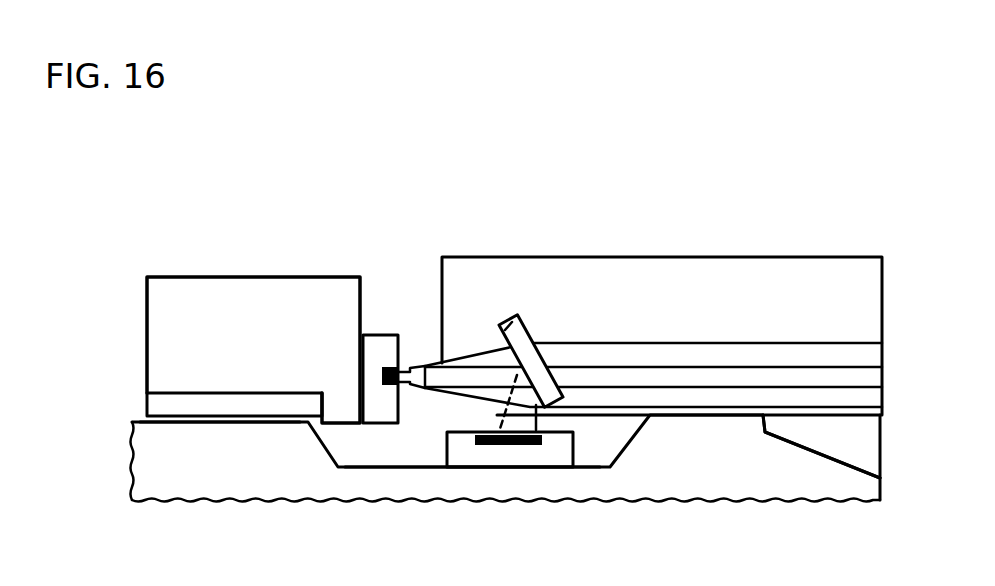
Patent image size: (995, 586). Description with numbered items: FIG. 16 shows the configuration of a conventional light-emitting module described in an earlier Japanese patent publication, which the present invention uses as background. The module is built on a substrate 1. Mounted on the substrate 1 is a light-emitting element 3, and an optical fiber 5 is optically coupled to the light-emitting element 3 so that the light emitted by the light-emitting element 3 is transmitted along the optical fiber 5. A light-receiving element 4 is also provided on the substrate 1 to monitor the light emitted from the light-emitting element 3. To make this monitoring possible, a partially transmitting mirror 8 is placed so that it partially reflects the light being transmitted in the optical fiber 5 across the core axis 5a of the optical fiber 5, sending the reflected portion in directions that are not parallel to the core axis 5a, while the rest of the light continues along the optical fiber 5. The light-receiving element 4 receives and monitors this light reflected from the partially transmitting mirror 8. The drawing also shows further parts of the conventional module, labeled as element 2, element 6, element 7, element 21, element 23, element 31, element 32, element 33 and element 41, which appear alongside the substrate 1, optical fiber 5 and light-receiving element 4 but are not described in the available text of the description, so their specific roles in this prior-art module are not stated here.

The substrate 1 is at (835, 445).
The optical module package 2 is at (262, 285).
The light-emitting element 3 is at (382, 345).
The light-receiving element 4 is at (558, 452).
The optical fiber 5 is at (733, 350).
The core axis 5a is at (778, 382).
The fiber housing 6 is at (650, 287).
The optical filter plate 7 is at (536, 346).
The partially transmitting mirror 8 is at (508, 326).
The light emitting element 21 is at (404, 368).
The support post 23 is at (495, 415).
The upper surface of substrate 31 is at (163, 423).
The recess bottom 32 is at (416, 468).
The groove 33 is at (880, 478).
The wiring board 41 is at (158, 403).